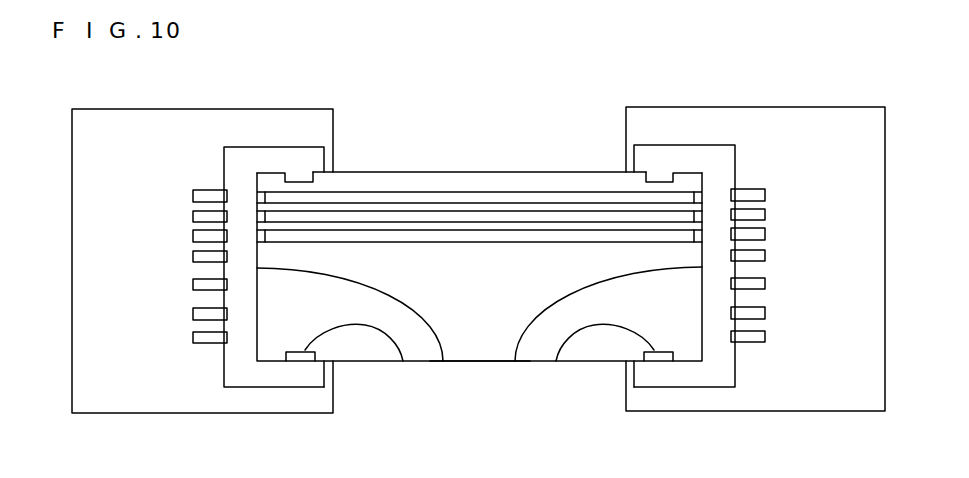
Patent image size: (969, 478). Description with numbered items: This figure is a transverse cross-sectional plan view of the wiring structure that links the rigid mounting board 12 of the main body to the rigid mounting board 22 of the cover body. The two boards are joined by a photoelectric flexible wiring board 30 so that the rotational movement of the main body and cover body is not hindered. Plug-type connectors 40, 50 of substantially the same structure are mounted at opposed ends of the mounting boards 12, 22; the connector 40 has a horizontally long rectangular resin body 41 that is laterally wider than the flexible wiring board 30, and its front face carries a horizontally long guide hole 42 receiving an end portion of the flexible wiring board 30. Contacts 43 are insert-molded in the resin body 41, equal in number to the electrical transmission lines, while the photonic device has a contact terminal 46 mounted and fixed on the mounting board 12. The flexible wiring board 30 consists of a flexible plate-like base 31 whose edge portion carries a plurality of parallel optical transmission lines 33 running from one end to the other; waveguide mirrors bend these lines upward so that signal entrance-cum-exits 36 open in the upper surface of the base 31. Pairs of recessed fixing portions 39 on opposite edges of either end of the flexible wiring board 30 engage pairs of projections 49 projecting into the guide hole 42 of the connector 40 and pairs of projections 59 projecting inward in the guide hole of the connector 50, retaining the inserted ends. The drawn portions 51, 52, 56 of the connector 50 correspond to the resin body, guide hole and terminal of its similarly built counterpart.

The mounting board 12 is at (248, 413).
The mounting board 22 is at (708, 411).
The photoelectric flexible wiring board 30 is at (478, 363).
The plate-like base 31 is at (388, 172).
The optical transmission line 33 is at (434, 200).
The signal entrance-cum-exit 36 is at (260, 195).
The recessed fixing portion 39 is at (291, 176).
The connector 40 is at (267, 147).
The resin body 41 is at (326, 376).
The guide hole 42 is at (444, 361).
The contact 43 is at (193, 312).
The contact terminal 46 is at (193, 217).
The projection 49 is at (320, 183).
The connector 50 is at (664, 146).
The second recess side wall 51 is at (632, 376).
The second fillet 52 is at (515, 361).
The second board electrode 56 is at (766, 216).
The projection 59 is at (642, 185).